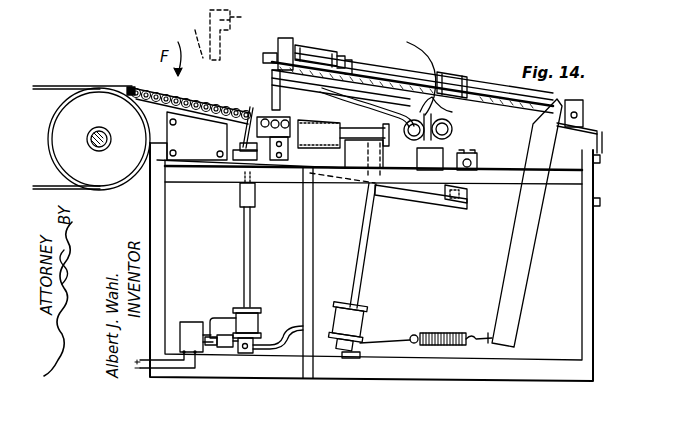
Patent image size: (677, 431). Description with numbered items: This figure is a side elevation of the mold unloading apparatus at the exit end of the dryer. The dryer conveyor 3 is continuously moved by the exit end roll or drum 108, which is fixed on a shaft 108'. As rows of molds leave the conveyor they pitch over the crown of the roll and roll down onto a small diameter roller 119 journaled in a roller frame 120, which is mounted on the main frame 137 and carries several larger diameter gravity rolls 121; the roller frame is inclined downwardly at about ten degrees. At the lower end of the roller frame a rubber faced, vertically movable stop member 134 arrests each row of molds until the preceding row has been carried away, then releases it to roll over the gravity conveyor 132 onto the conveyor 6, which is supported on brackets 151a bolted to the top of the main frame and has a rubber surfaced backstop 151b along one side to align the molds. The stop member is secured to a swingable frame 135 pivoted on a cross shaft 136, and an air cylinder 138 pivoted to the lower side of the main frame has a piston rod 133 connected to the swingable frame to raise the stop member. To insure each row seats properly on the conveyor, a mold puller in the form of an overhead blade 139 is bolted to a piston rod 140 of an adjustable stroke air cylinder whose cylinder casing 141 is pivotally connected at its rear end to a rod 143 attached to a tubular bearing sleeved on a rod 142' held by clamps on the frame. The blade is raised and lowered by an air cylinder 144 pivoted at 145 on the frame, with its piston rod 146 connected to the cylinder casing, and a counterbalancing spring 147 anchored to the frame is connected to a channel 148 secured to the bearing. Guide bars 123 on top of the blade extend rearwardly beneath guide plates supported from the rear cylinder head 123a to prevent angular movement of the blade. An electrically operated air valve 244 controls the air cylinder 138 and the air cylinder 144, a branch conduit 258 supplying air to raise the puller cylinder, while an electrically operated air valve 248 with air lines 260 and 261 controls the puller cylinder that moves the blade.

The conveyor 3 is at (44, 0).
The exit end roll or drum 108 is at (91, 95).
The shaft 108' is at (98, 128).
The small diameter roller 119 is at (134, 88).
The roller frame 120 is at (182, 132).
The gravity rolls 121 is at (182, 98).
The overhead blade 139 is at (281, 42).
The piston rod 140 is at (307, 33).
The cylinder casing 141 is at (360, 61).
The air line 260 is at (412, 78).
The rear cylinder head 123a is at (437, 75).
The rod 143 is at (470, 62).
The guide bars 123 is at (450, 127).
The air line 261 is at (452, 132).
The channel 148 is at (578, 103).
The rod 142' is at (595, 117).
The stop member 134 is at (250, 106).
The gravity conveyor 132 is at (282, 124).
The conveyor 6 is at (310, 125).
The cross shaft 136 is at (466, 153).
The backstop 151b is at (404, 160).
The brackets 151a is at (362, 157).
The swingable frame 135 is at (415, 198).
The electrically operated air valve 248 is at (442, 212).
The main frame 137 is at (566, 195).
The piston rod 133 is at (242, 248).
The piston rod 146 is at (362, 242).
The air cylinder 138 is at (206, 322).
The branch conduit 258 is at (293, 324).
The electrically operated air valve 244 is at (188, 327).
The air cylinder 144 is at (364, 318).
The counterbalancing spring 147 is at (462, 318).
The pivot 145 is at (338, 358).